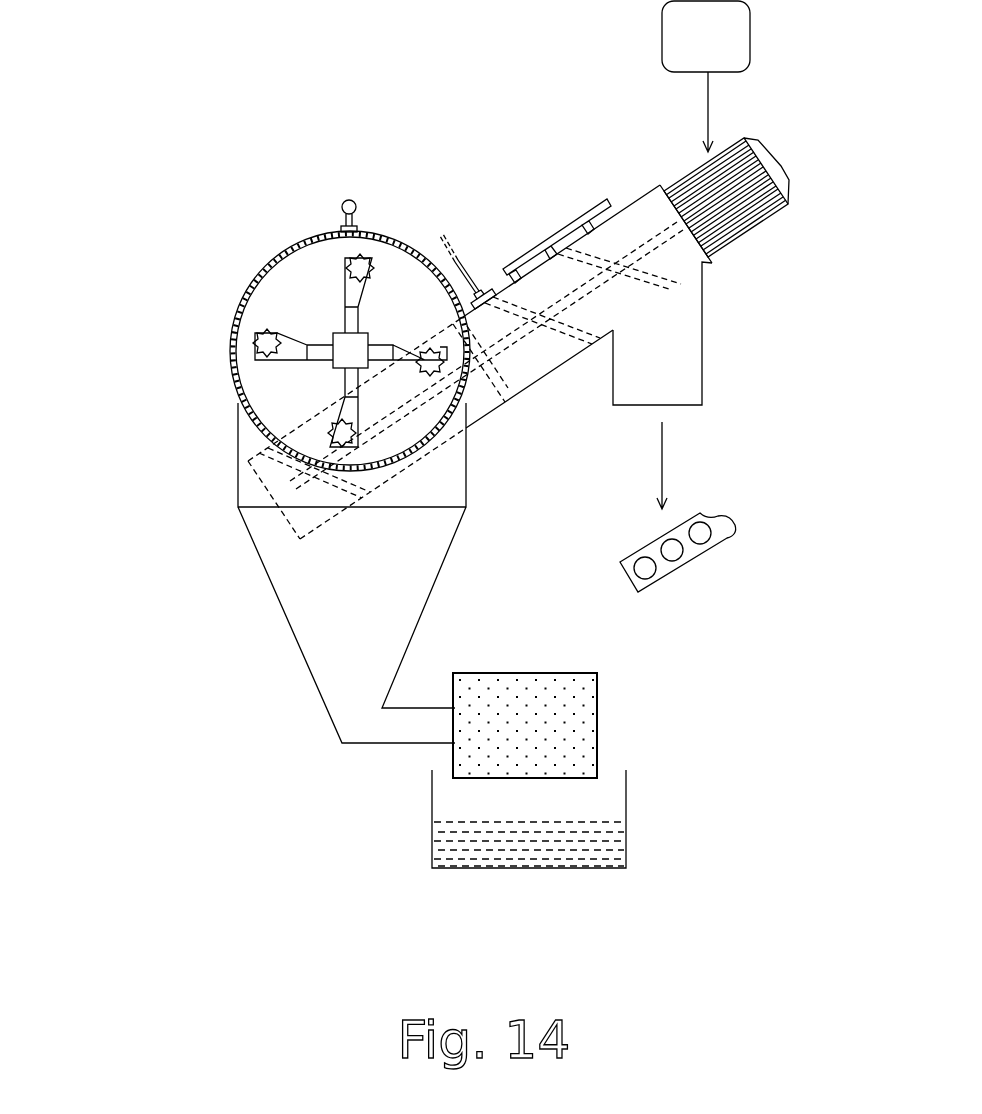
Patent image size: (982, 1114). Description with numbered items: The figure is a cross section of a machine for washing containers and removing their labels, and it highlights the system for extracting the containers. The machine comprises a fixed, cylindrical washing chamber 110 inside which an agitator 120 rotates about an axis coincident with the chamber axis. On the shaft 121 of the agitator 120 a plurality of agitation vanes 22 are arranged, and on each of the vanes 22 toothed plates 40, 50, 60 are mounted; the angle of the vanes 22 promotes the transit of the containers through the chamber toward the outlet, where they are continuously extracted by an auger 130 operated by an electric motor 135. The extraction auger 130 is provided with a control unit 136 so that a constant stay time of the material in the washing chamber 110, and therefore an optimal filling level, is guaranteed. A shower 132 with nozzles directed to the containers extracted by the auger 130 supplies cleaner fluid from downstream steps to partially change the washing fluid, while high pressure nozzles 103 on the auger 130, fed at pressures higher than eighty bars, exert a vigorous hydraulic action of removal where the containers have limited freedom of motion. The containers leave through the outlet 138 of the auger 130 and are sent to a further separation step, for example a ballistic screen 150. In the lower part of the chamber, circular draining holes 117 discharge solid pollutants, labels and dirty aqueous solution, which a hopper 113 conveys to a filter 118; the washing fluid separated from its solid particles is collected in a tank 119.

The washing chamber 110 is at (253, 278).
The agitation vanes 22 is at (303, 343).
The shaft 121 is at (357, 343).
The agitator 120 is at (214, 421).
The toothed plate 40 is at (363, 260).
The toothed plate 50 is at (257, 347).
The toothed plate 60 is at (386, 397).
The auger 130 is at (533, 340).
The shower 132 is at (545, 237).
The high pressure nozzles 103 is at (478, 302).
The electric motor 135 is at (740, 207).
The control unit 136 is at (688, 51).
The outlet 138 is at (683, 407).
The ballistic screen 150 is at (690, 552).
The draining holes 117 is at (390, 465).
The hopper 113 is at (272, 547).
The filter 118 is at (585, 745).
The tank 119 is at (627, 783).